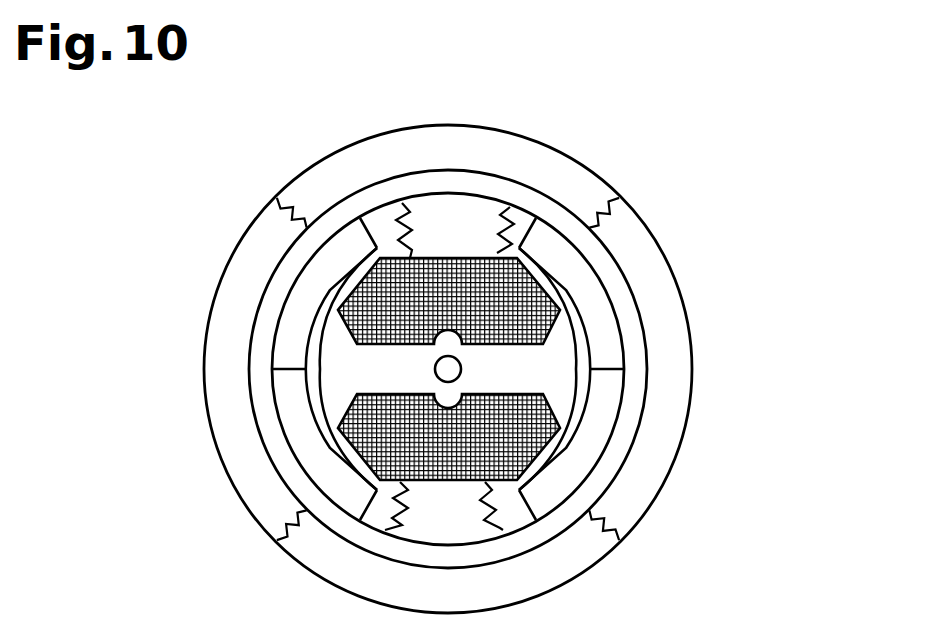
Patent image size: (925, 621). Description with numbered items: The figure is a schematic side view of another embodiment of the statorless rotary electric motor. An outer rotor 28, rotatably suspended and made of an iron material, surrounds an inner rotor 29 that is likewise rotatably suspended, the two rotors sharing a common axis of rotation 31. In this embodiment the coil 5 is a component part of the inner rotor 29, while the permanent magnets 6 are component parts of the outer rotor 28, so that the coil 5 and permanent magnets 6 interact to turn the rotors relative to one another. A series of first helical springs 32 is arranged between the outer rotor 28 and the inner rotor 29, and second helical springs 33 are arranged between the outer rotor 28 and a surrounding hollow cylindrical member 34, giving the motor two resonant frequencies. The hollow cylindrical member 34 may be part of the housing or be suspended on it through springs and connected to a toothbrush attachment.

The coil 5 is at (565, 271).
The permanent magnets 6 is at (603, 288).
The outer rotor 28 is at (660, 384).
The inner rotor 29 is at (452, 252).
The axis of rotation 31 is at (455, 368).
The first helical springs 32 is at (402, 203).
The second helical springs 33 is at (300, 210).
The hollow cylindrical member 34 is at (570, 178).